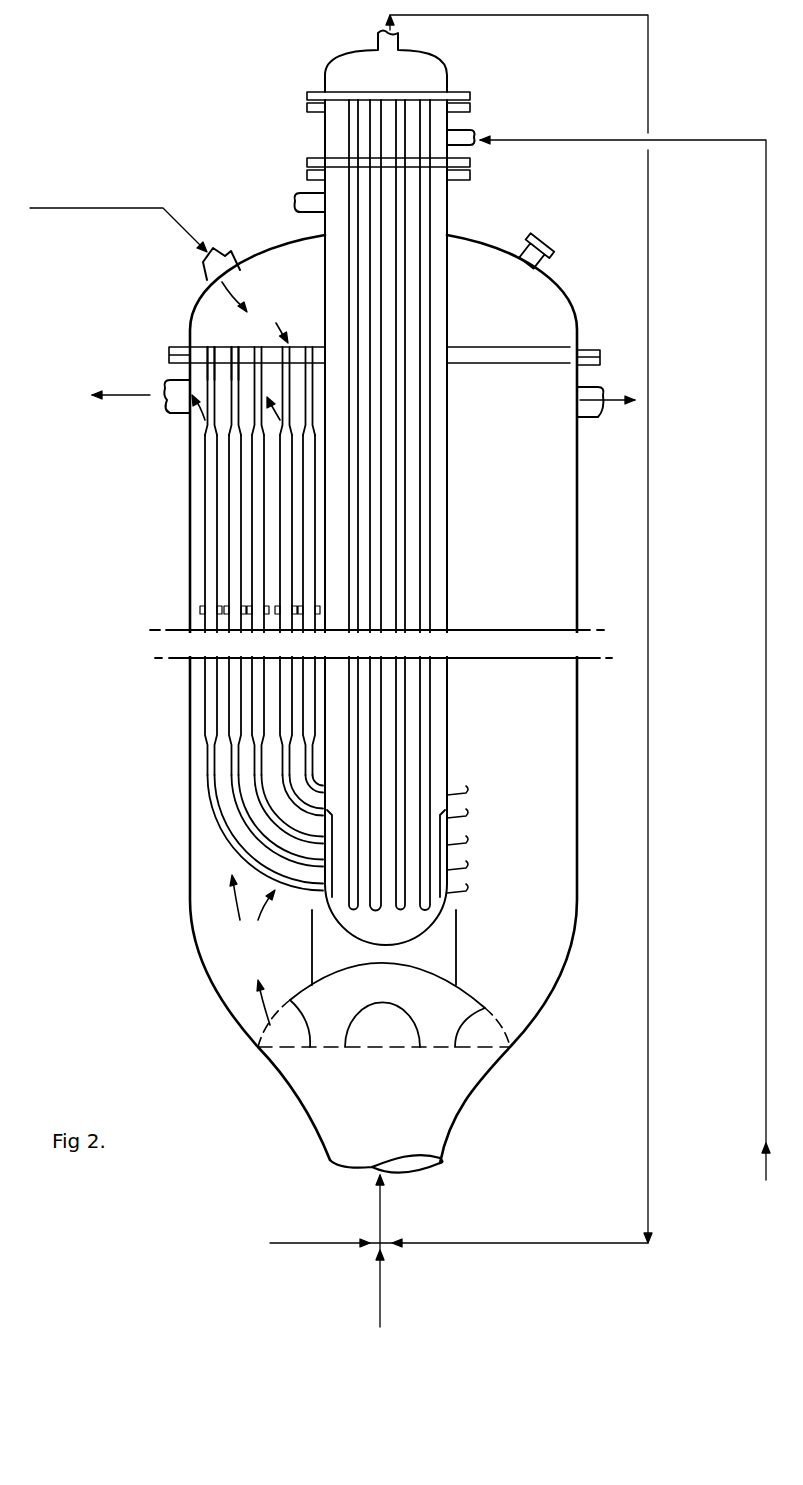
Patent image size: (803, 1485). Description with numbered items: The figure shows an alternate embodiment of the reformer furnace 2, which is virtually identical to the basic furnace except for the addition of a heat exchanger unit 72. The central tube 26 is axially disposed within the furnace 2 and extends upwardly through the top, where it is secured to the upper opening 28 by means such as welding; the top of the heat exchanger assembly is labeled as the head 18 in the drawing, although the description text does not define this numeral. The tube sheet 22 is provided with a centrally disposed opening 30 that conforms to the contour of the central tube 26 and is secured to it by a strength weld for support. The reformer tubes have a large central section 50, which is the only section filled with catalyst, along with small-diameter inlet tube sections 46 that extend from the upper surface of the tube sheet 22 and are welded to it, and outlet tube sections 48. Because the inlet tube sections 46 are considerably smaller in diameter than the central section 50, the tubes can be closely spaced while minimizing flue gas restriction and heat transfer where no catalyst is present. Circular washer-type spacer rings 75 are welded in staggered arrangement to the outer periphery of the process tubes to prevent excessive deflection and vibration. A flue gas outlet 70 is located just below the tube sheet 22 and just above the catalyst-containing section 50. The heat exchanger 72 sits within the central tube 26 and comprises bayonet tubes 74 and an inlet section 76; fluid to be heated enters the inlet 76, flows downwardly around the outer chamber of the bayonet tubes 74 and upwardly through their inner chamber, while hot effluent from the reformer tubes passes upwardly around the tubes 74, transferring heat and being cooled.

The reformer furnace 2 is at (155, 703).
The heat exchanger head 18 is at (402, 80).
The tube sheet 22 is at (298, 347).
The central tube 26 is at (326, 262).
The upper opening 28 is at (452, 233).
The centrally disposed opening 30 is at (450, 347).
The inlet tube sections 46 is at (226, 372).
The outlet tube sections 48 is at (258, 850).
The large central section 50 is at (240, 558).
The flue gas outlet 70 is at (168, 385).
The heat exchanger unit 72 is at (337, 190).
The bayonet tubes 74 is at (385, 212).
The spacer rings 75 is at (200, 608).
The inlet section 76 is at (440, 130).